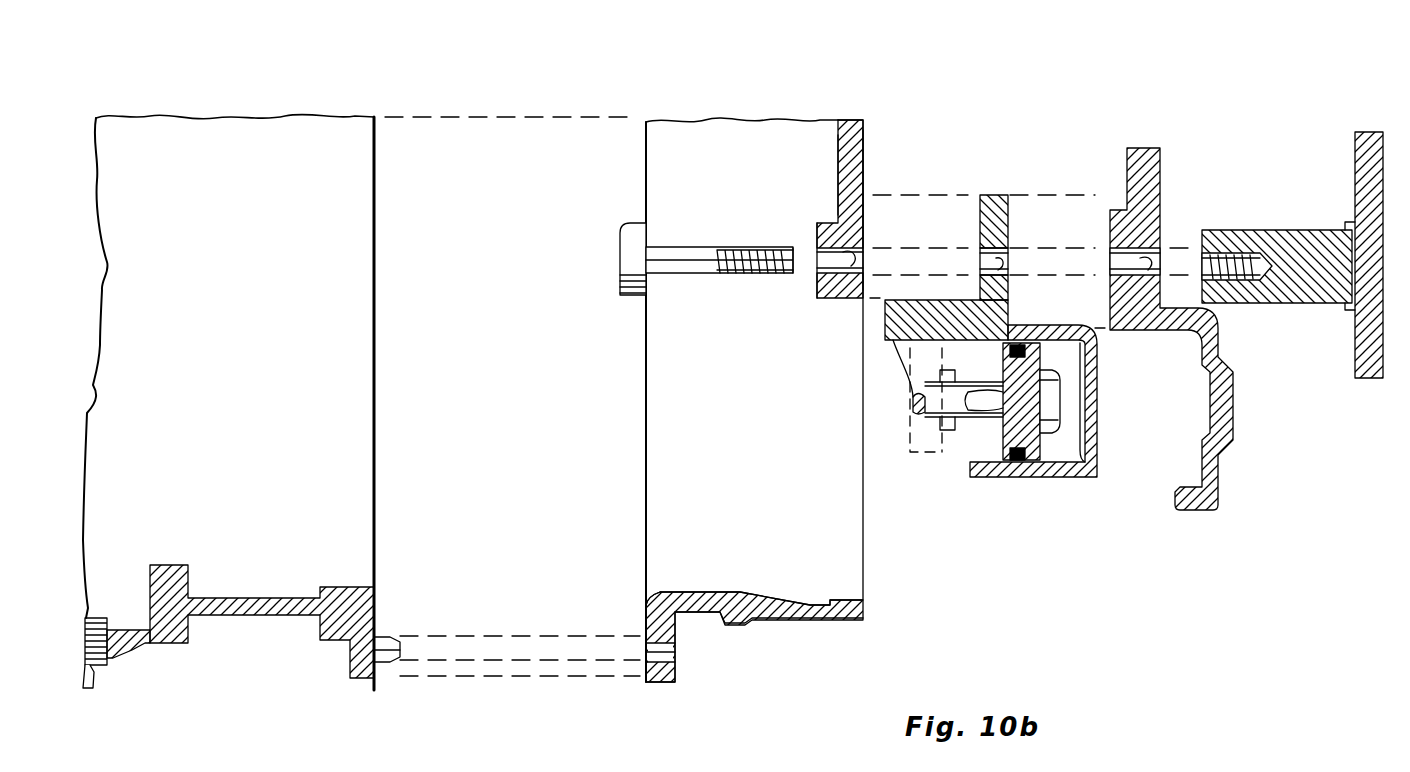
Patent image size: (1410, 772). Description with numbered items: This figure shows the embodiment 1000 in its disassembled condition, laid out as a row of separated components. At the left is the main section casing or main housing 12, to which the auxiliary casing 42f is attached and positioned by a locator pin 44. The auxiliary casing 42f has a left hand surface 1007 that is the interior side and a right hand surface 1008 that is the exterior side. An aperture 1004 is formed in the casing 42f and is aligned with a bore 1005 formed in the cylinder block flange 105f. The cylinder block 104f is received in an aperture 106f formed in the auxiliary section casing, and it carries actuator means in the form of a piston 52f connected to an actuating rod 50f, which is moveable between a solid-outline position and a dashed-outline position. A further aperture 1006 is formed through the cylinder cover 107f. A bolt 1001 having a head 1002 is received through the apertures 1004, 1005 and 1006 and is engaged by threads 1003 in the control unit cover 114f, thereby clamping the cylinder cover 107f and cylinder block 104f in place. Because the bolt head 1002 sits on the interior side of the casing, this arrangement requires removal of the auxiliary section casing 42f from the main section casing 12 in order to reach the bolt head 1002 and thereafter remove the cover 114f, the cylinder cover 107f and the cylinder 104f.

The main housing 12 is at (232, 617).
The locator pin 44 is at (390, 660).
The auxiliary casing 42f is at (847, 122).
The bolt 1001 is at (677, 247).
The head 1002 is at (618, 252).
The threads 1003 is at (737, 247).
The aperture 1004 is at (863, 262).
The bore 1005 is at (1048, 247).
The aperture 1006 is at (1163, 257).
The interior side surface 1007 is at (838, 155).
The exterior side surface 1008 is at (863, 160).
The cylinder block 104f is at (903, 300).
The cylinder block flange 105f is at (995, 195).
The aperture 106f is at (838, 298).
The cylinder cover 107f is at (1142, 148).
The embodiment 1000 is at (1277, 184).
The control unit cover 114f is at (1373, 132).
The actuating rod 50f is at (967, 410).
The piston 52f is at (993, 447).